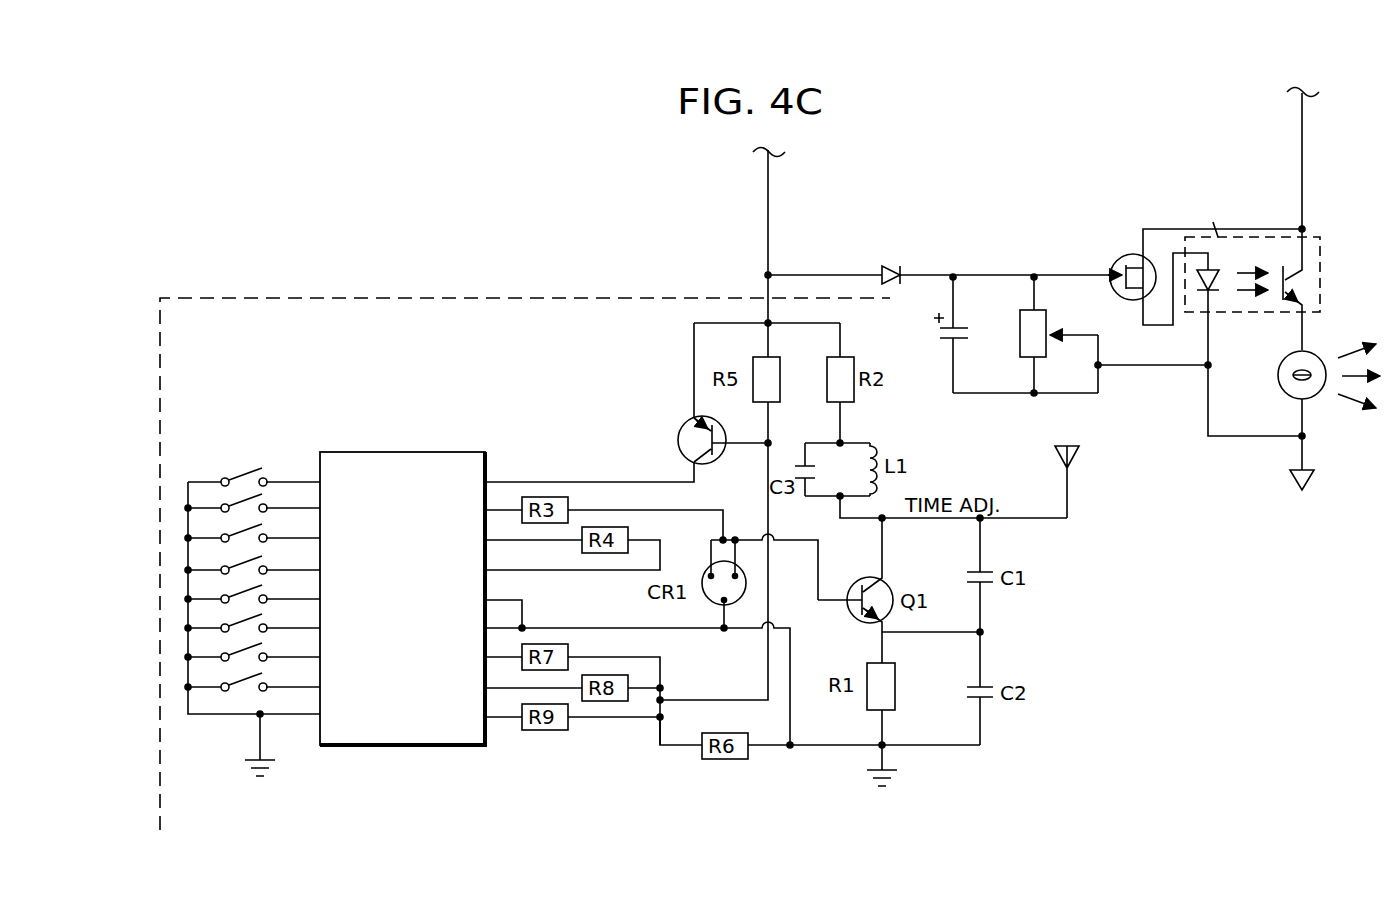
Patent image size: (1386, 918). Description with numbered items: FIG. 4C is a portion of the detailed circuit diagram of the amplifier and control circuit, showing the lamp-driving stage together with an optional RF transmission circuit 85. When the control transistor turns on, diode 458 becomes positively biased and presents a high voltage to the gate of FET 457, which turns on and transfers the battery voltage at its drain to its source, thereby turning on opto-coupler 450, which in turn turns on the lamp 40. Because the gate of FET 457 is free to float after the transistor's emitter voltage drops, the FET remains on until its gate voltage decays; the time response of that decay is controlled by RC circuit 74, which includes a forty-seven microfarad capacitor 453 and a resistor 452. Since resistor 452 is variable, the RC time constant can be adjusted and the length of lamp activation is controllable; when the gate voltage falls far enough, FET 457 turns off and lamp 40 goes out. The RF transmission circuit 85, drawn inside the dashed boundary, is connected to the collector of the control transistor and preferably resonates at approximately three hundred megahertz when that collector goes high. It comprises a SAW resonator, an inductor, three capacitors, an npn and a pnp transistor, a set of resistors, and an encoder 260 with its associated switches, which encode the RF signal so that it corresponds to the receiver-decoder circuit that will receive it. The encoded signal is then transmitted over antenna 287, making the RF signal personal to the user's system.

The RF transmission circuit 85 is at (551, 408).
The encoder 260 is at (418, 450).
The diode 458 is at (893, 267).
The 47 uF capacitor 453 is at (965, 330).
The RC circuit 74 is at (1000, 420).
The resistor 452 is at (1040, 358).
The FET 457 is at (1117, 265).
The opto-coupler 450 is at (1324, 292).
The lamp 40 is at (1278, 376).
The antenna 287 is at (1078, 454).